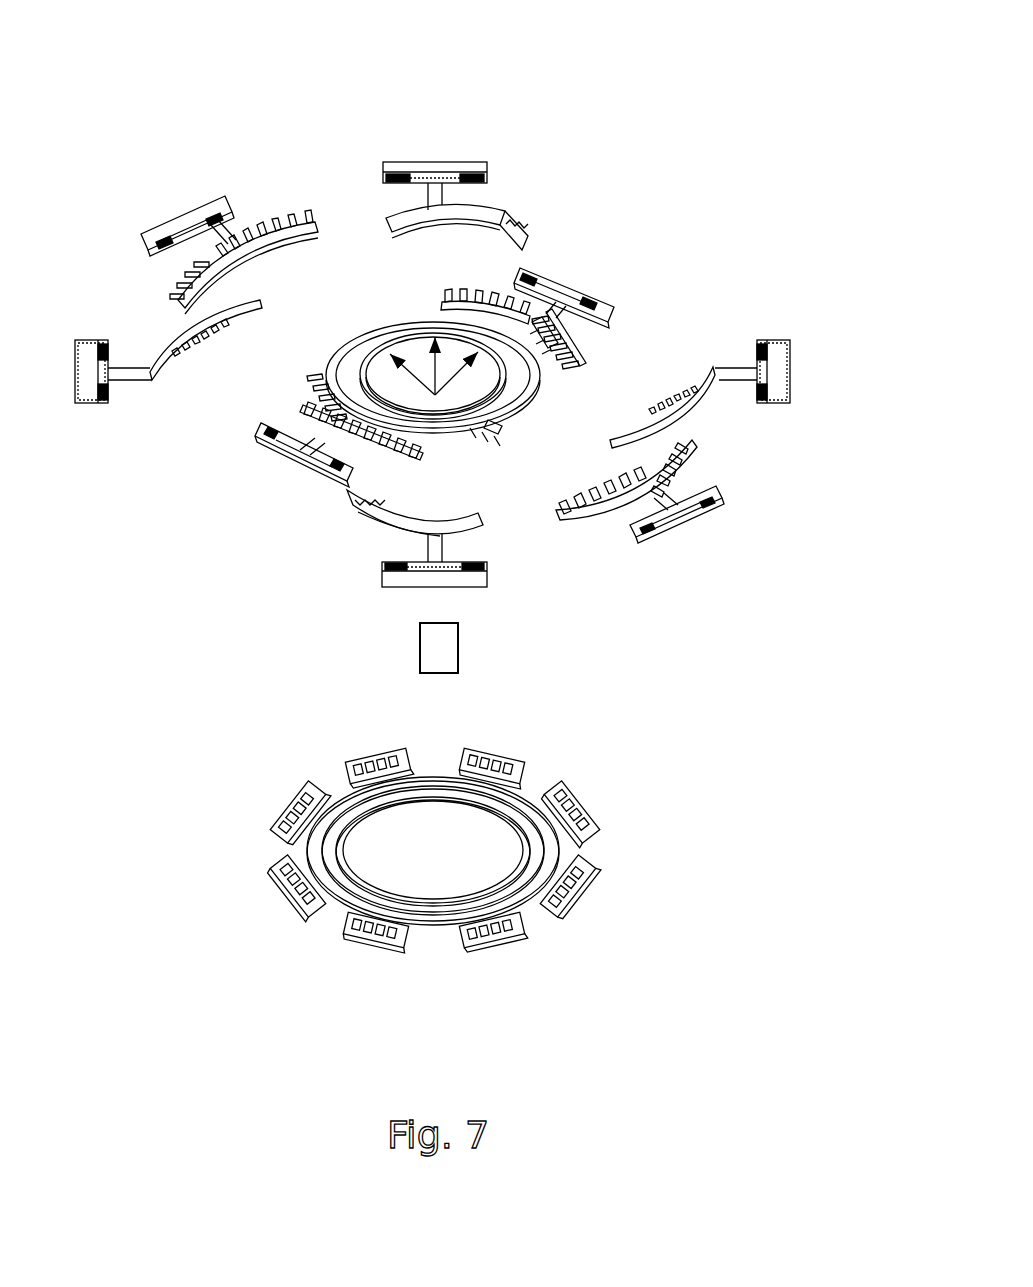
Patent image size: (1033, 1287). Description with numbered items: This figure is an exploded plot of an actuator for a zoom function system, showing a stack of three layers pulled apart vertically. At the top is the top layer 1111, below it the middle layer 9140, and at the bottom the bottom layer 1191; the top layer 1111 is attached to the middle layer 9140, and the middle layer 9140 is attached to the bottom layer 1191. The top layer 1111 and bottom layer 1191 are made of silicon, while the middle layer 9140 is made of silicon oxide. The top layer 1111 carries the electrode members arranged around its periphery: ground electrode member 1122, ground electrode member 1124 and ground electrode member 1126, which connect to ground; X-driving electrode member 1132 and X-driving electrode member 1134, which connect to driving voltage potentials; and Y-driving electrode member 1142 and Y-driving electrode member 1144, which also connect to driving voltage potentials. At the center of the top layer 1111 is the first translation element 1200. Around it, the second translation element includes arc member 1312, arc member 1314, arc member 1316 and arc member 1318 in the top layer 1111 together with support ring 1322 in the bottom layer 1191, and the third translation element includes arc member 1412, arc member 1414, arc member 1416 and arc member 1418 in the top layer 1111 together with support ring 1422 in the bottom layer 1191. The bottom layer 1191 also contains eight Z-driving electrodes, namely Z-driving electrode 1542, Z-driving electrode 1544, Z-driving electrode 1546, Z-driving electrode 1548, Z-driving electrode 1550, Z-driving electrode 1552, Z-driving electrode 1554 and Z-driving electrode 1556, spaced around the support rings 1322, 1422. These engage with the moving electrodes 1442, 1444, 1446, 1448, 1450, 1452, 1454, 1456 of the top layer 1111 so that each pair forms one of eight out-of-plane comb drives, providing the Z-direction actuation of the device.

The top layer 1111 is at (705, 630).
The bottom layer 1191 is at (684, 943).
The first translation element 1200 is at (425, 325).
The ground electrode member 1122 is at (591, 287).
The ground electrode member 1124 is at (172, 207).
The ground electrode member 1126 is at (707, 532).
The X-driving electrode member 1132 is at (432, 157).
The X-driving electrode member 1134 is at (455, 600).
The Y-driving electrode member 1142 is at (737, 357).
The Y-driving electrode member 1144 is at (132, 397).
The arc member 1312 is at (537, 387).
The arc member 1314 is at (410, 218).
The arc member 1316 is at (357, 335).
The arc member 1318 is at (430, 520).
The support ring 1322 is at (360, 808).
The arc member 1412 is at (560, 366).
The arc member 1414 is at (190, 300).
The arc member 1416 is at (322, 396).
The arc member 1418 is at (580, 513).
The support ring 1422 is at (312, 822).
The moving electrode 1442 is at (490, 287).
The moving electrode 1444 is at (275, 216).
The moving electrode 1446 is at (172, 302).
The moving electrode 1448 is at (290, 403).
The moving electrode 1450 is at (372, 460).
The moving electrode 1452 is at (580, 540).
The moving electrode 1454 is at (706, 464).
The moving electrode 1456 is at (586, 346).
The Z-driving electrode 1542 is at (527, 785).
The Z-driving electrode 1544 is at (416, 763).
The Z-driving electrode 1546 is at (320, 795).
The Z-driving electrode 1548 is at (286, 855).
The Z-driving electrode 1550 is at (332, 917).
The Z-driving electrode 1552 is at (446, 940).
The Z-driving electrode 1554 is at (545, 907).
The Z-driving electrode 1556 is at (578, 852).
The middle layer 9140 is at (407, 636).